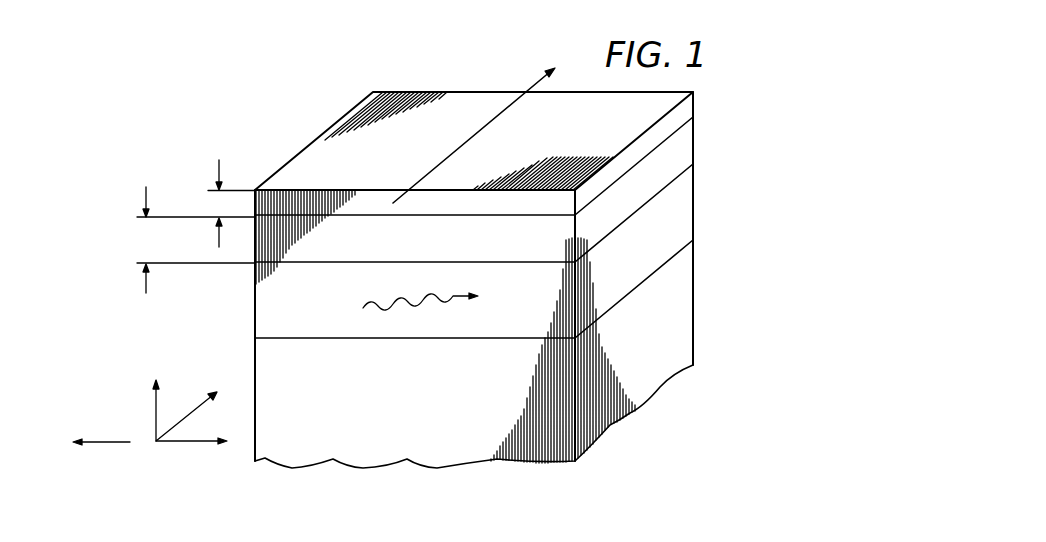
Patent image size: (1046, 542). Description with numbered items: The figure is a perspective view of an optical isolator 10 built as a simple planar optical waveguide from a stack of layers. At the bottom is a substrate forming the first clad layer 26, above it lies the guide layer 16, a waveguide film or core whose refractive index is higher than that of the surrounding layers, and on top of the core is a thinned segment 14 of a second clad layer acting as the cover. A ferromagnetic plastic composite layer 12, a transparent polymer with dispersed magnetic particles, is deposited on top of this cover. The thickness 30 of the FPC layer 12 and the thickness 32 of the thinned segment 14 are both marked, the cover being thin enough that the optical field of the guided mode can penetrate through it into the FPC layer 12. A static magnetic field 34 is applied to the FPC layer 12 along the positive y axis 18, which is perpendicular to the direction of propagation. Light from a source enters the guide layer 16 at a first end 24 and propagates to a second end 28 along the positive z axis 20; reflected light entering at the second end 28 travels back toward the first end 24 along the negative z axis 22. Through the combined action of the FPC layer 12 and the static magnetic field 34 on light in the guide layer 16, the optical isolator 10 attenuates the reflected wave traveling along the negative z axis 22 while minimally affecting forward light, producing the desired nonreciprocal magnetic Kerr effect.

The optical isolator 10 is at (356, 57).
The ferromagnetic plastic composite layer 12 is at (303, 142).
The thinned segment of second clad layer 14 is at (688, 143).
The guide layer 16 is at (688, 212).
The positive y axis 18 is at (192, 408).
The positive z axis 20 is at (185, 444).
The negative z axis 22 is at (108, 444).
The first end 24 is at (253, 303).
The first clad layer 26 is at (688, 323).
The second end 28 is at (623, 290).
The thickness of FPC layer 30 is at (218, 203).
The thickness of thinned segment 32 is at (143, 238).
The static magnetic field 34 is at (457, 143).